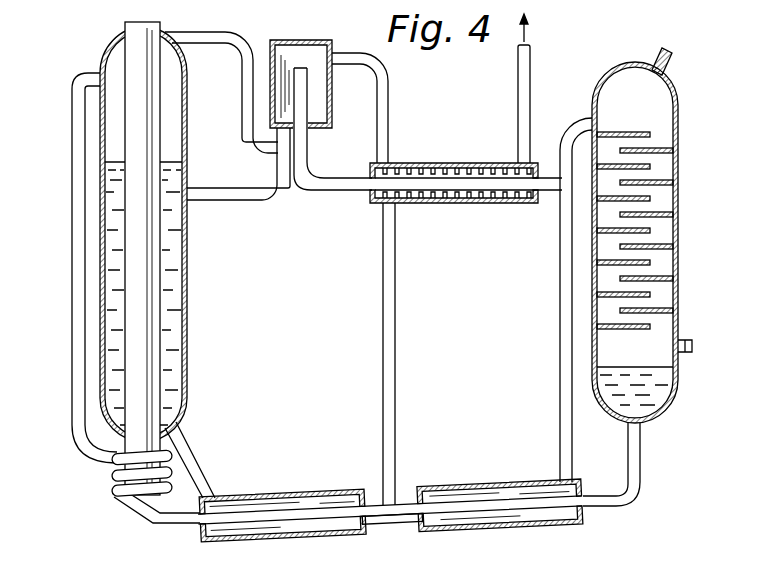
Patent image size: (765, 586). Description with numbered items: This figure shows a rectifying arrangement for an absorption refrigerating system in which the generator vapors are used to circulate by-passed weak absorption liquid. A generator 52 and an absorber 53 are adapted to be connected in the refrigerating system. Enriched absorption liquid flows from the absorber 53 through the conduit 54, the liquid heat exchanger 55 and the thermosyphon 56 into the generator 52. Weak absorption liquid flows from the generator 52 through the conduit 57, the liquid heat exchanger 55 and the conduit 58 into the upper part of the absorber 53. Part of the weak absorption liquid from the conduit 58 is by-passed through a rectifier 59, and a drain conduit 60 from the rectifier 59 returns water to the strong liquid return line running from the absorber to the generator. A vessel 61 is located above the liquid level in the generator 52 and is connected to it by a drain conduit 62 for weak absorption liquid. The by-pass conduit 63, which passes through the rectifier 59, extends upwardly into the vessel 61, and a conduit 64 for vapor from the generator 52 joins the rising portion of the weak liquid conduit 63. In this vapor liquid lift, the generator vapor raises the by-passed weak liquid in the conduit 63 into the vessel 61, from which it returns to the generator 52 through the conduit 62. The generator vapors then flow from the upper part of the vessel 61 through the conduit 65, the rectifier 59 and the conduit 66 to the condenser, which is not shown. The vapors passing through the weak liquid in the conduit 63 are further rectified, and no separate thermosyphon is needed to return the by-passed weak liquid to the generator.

The generator 52 is at (187, 342).
The absorber 53 is at (678, 238).
The conduit 54 is at (632, 497).
The liquid heat exchanger 55 is at (445, 529).
The thermosyphon 56 is at (72, 425).
The conduit 57 is at (185, 438).
The conduit 58 is at (560, 400).
The rectifier 59 is at (432, 204).
The drain conduit 60 is at (395, 268).
The vessel 61 is at (318, 128).
The drain conduit 62 is at (215, 200).
The by-pass conduit 63 is at (318, 192).
The conduit 64 is at (242, 95).
The conduit 65 is at (388, 93).
The conduit 66 is at (530, 93).